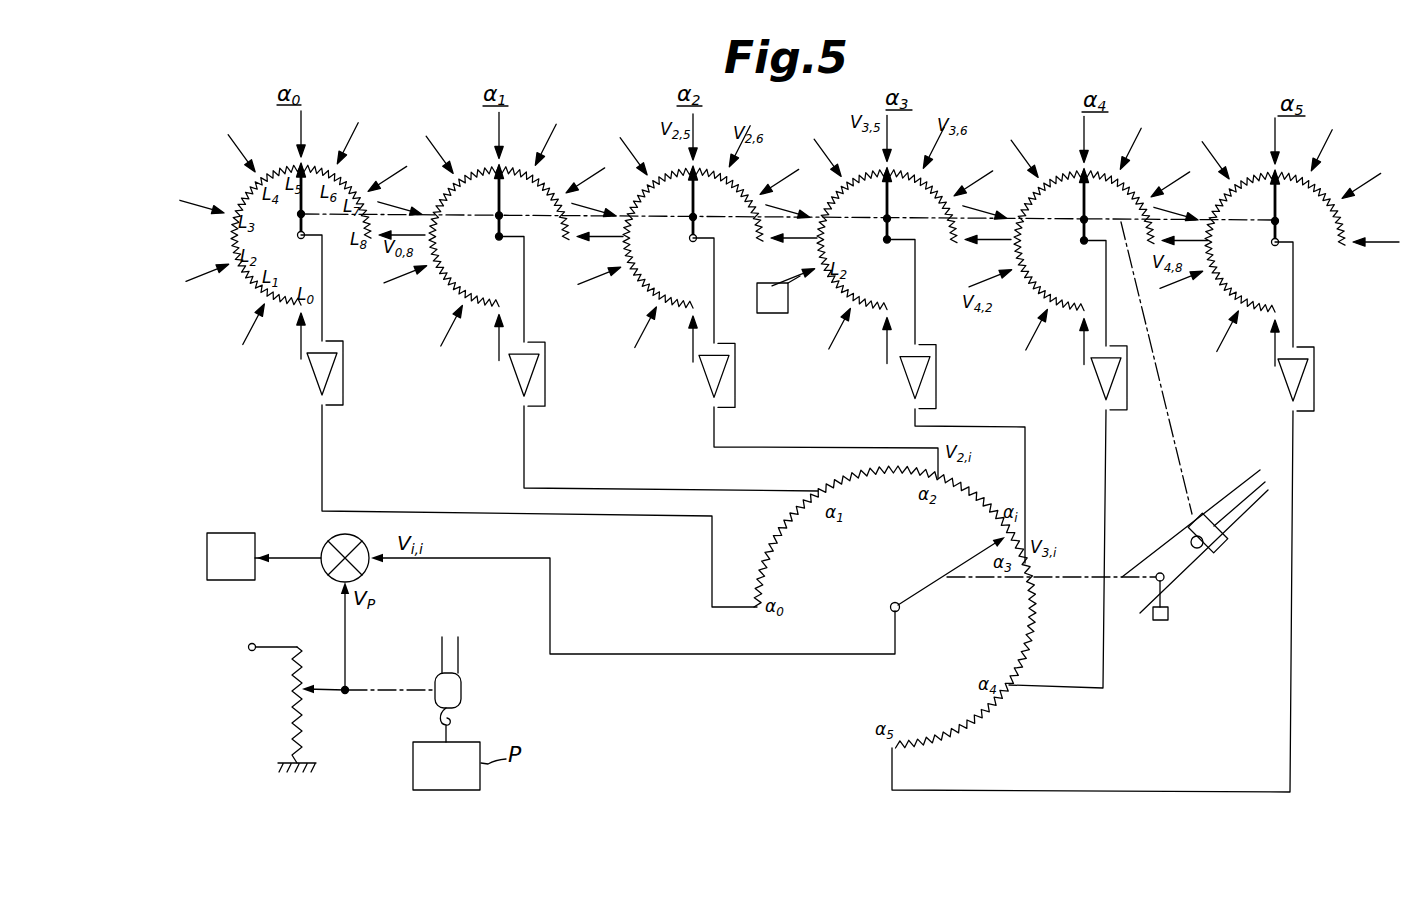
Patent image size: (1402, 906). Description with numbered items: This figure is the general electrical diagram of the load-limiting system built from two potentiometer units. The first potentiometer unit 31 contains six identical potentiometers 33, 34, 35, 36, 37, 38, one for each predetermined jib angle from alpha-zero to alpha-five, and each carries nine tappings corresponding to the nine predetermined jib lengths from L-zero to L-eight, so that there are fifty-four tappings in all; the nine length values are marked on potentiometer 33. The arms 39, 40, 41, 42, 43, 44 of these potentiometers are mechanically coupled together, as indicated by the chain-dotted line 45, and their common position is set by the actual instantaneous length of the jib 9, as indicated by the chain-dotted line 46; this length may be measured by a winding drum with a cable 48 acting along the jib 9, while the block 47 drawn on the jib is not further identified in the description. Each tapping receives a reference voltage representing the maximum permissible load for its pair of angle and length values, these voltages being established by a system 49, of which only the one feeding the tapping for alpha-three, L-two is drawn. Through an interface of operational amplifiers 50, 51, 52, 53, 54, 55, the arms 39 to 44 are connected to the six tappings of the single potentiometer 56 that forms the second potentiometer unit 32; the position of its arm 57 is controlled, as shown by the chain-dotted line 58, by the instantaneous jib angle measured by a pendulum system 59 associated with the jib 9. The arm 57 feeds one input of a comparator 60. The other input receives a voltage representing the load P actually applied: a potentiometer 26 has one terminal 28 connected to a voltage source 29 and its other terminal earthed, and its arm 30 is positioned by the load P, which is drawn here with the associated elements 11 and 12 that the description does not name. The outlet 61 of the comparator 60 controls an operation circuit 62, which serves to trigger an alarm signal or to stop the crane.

The jib 9 is at (1162, 552).
The sensing element 11 is at (459, 692).
The hook 12 is at (452, 723).
The wiper 26 is at (285, 714).
The terminal 28 is at (297, 645).
The voltage source 29 is at (253, 643).
The potentiometer arm 30 is at (332, 694).
The potentiometer unit 31 is at (766, 162).
The potentiometer unit 32 is at (872, 668).
The potentiometer 33 is at (316, 161).
The potentiometer 34 is at (510, 163).
The potentiometer 35 is at (703, 166).
The potentiometer 36 is at (906, 167).
The potentiometer 37 is at (1094, 167).
The potentiometer 38 is at (1294, 171).
The potentiometer arm 39 is at (299, 236).
The potentiometer arm 40 is at (498, 238).
The potentiometer arm 41 is at (691, 239).
The potentiometer arm 42 is at (886, 241).
The potentiometer arm 43 is at (1082, 242).
The potentiometer arm 44 is at (1273, 243).
The chain-dotted line 45 is at (1087, 217).
The chain-dotted line 46 is at (1163, 379).
The slide block 47 is at (1208, 553).
The cable 48 is at (1245, 502).
The system 49 is at (783, 313).
The operational amplifier 50 is at (320, 370).
The operational amplifier 51 is at (521, 371).
The operational amplifier 52 is at (712, 372).
The operational amplifier 53 is at (910, 375).
The operational amplifier 54 is at (1102, 376).
The operational amplifier 55 is at (1289, 378).
The potentiometer 56 is at (771, 533).
The arm 57 is at (899, 603).
The chain-dotted line 58 is at (1055, 562).
The pendulum system 59 is at (1169, 613).
The comparator 60 is at (328, 541).
The outlet 61 is at (266, 556).
The operation circuit 62 is at (222, 533).